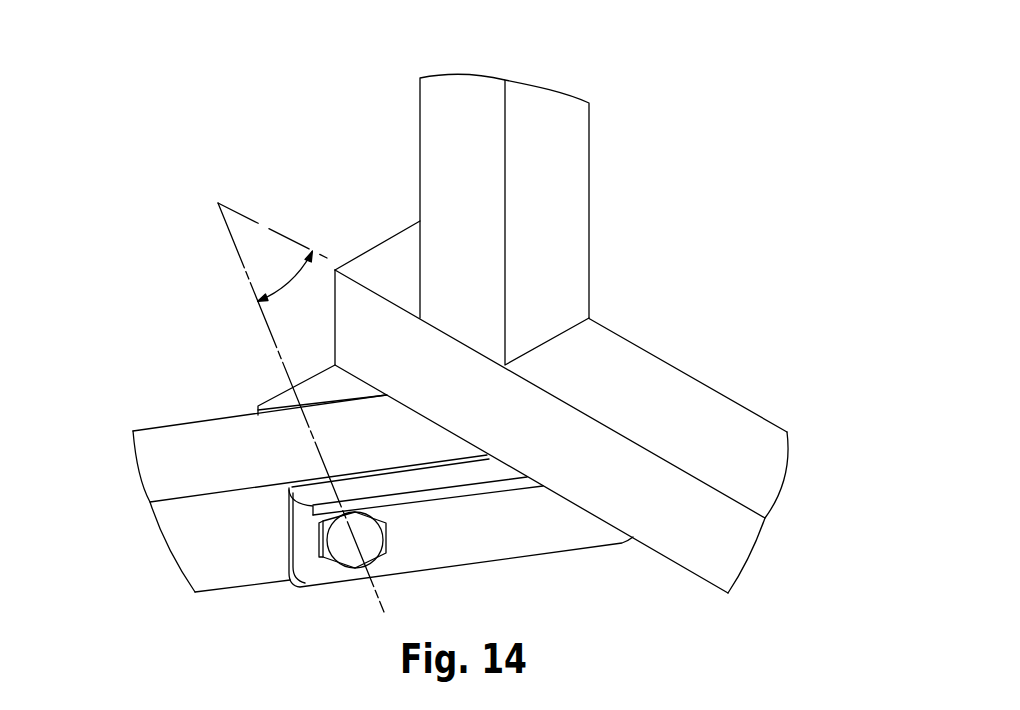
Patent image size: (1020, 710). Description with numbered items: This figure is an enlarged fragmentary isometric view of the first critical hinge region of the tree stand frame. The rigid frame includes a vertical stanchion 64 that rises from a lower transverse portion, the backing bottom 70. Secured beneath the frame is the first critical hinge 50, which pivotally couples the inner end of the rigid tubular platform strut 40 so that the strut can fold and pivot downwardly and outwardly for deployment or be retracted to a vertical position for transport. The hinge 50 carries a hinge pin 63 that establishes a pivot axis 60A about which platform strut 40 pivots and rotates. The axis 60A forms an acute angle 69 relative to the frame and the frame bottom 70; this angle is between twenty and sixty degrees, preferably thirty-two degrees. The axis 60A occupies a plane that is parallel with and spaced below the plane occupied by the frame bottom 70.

The platform strut 40 is at (180, 425).
The first critical hinge 50 is at (520, 560).
The pivot axis 60A is at (253, 288).
The hinge pin 63 is at (356, 553).
The stanchion 64 is at (589, 160).
The acute angle 69 is at (290, 285).
The backing bottom 70 is at (732, 399).